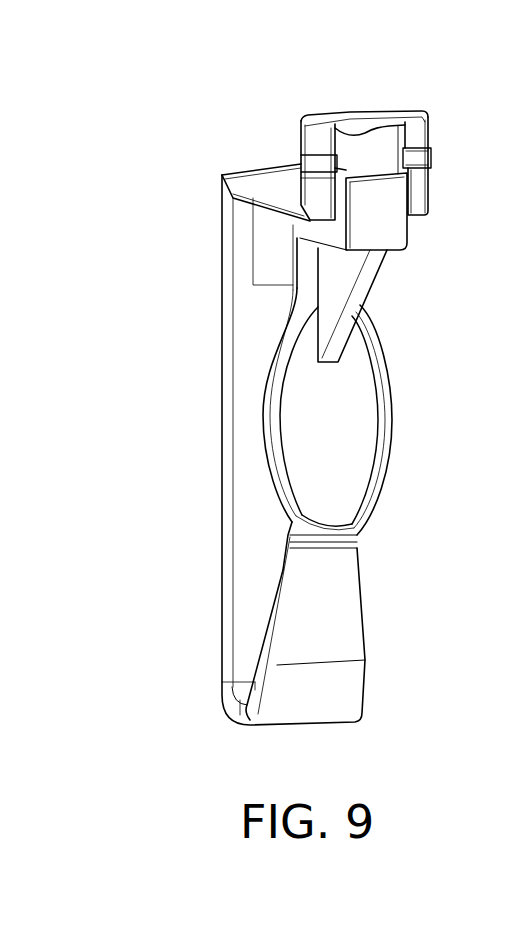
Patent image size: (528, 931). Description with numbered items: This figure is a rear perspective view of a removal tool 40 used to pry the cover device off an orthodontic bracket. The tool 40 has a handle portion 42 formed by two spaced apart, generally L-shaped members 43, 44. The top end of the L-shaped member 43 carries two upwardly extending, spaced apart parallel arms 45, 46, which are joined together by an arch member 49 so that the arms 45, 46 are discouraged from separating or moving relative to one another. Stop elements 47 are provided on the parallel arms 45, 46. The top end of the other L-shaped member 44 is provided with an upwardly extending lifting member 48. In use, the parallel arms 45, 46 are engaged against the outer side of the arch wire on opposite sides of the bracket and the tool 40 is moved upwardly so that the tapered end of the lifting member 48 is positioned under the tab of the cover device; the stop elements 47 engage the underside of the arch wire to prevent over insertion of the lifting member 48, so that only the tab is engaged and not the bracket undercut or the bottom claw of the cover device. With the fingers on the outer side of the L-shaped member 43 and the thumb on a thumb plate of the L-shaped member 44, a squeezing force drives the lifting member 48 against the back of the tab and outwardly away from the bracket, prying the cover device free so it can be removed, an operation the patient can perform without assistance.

The removal tool 40 is at (196, 238).
The handle portion 42 is at (229, 599).
The L-shaped member 43 is at (250, 483).
The L-shaped member 44 is at (352, 528).
The parallel arm 45 is at (425, 123).
The parallel arm 46 is at (318, 133).
The stop element 47 is at (320, 165).
The lifting member 48 is at (387, 222).
The arch member 49 is at (360, 123).